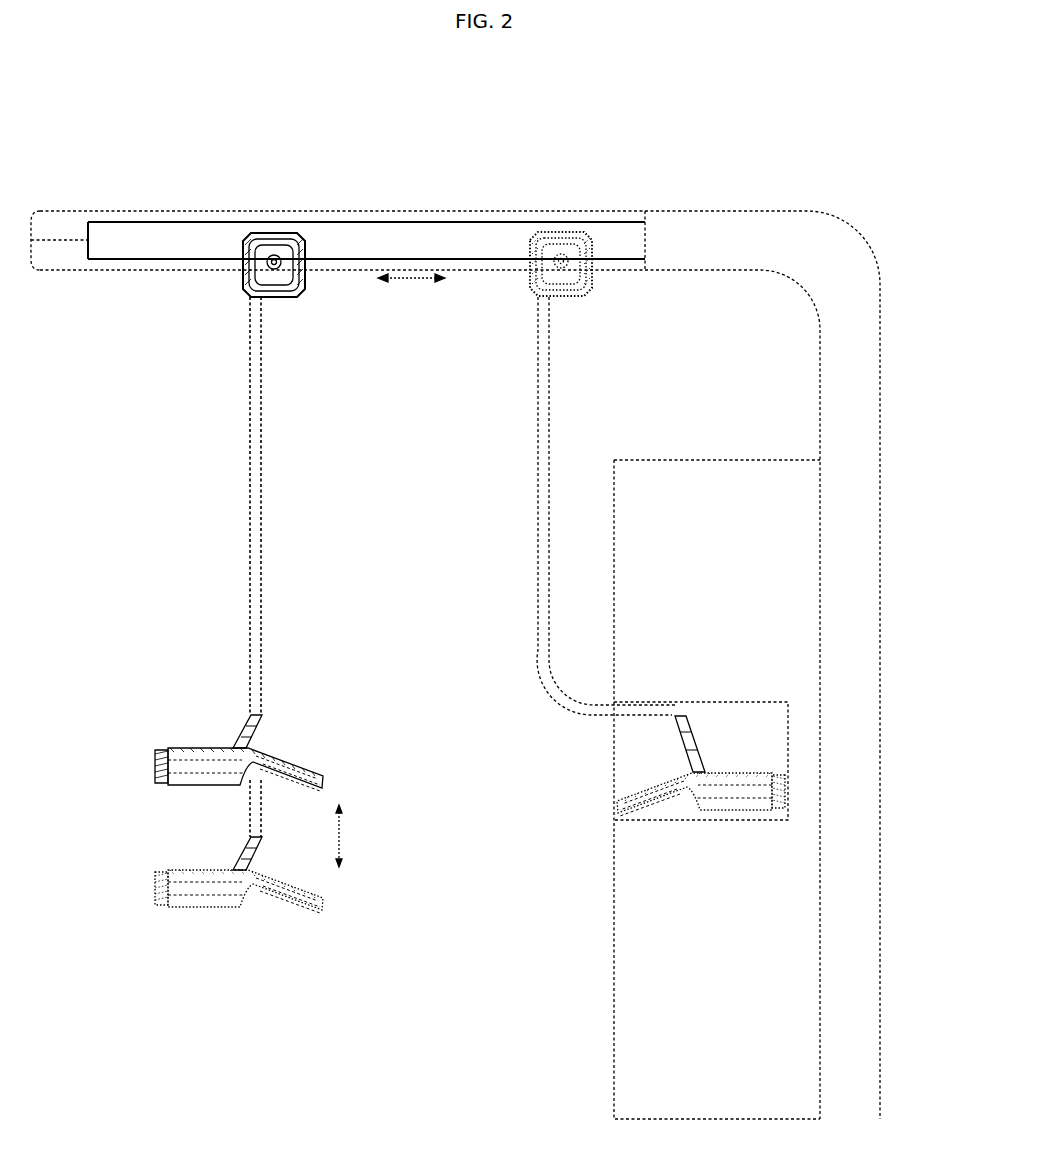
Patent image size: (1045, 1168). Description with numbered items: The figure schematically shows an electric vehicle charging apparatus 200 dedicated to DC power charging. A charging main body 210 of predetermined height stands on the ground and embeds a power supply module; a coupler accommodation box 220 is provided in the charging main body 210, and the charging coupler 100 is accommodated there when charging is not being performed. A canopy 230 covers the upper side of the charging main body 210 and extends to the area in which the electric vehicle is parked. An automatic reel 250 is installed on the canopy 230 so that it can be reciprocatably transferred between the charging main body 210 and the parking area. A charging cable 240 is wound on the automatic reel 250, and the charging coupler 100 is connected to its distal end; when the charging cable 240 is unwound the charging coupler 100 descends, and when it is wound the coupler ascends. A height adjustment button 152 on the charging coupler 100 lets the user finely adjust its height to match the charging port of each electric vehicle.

The charging coupler 100 is at (198, 747).
The height adjustment button 152 is at (265, 748).
The electric vehicle charging apparatus 200 is at (850, 216).
The charging main body 210 is at (715, 460).
The coupler accommodation box 220 is at (700, 702).
The canopy 230 is at (97, 272).
The charging cable 240 is at (250, 492).
The automatic reel 250 is at (290, 298).